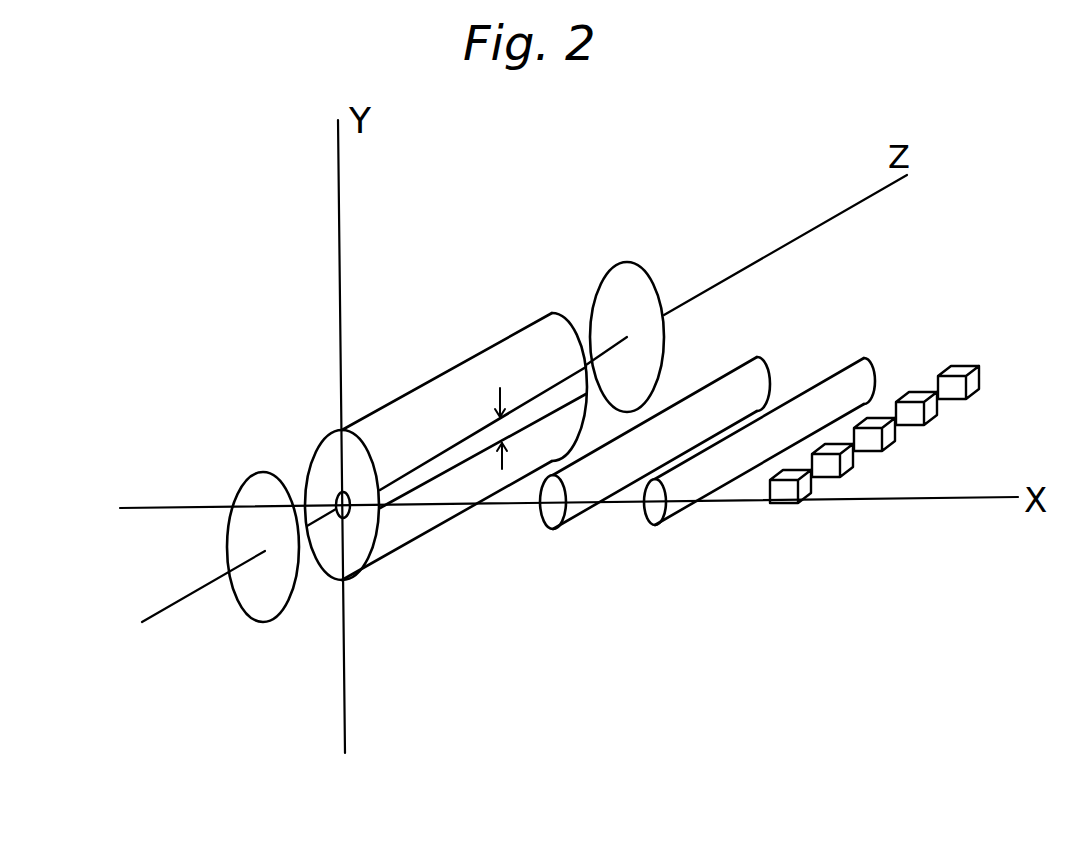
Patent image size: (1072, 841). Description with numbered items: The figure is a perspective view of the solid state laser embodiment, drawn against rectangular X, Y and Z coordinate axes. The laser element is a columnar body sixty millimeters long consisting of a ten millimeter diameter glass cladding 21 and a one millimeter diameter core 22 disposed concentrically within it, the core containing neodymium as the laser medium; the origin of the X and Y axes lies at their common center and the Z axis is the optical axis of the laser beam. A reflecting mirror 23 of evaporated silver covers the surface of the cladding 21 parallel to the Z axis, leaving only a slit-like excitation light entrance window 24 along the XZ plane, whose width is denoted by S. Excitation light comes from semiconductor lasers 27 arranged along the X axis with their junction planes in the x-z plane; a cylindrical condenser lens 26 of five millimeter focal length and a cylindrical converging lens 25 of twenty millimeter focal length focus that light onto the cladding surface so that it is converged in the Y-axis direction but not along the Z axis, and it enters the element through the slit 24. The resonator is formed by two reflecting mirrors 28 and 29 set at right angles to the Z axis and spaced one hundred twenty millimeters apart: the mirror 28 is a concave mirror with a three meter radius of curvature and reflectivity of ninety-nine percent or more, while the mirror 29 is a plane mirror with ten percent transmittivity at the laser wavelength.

The cladding 21 is at (330, 560).
The core 22 is at (348, 515).
The reflecting mirror 23 is at (440, 383).
The excitation light entrance window 24 is at (417, 480).
The cylindrical converging lens 25 is at (556, 527).
The cylindrical condenser lens 26 is at (663, 520).
The semiconductor lasers 27 is at (788, 496).
The reflecting mirror 28 is at (628, 262).
The reflecting mirror 29 is at (268, 470).
The slit width S is at (500, 430).